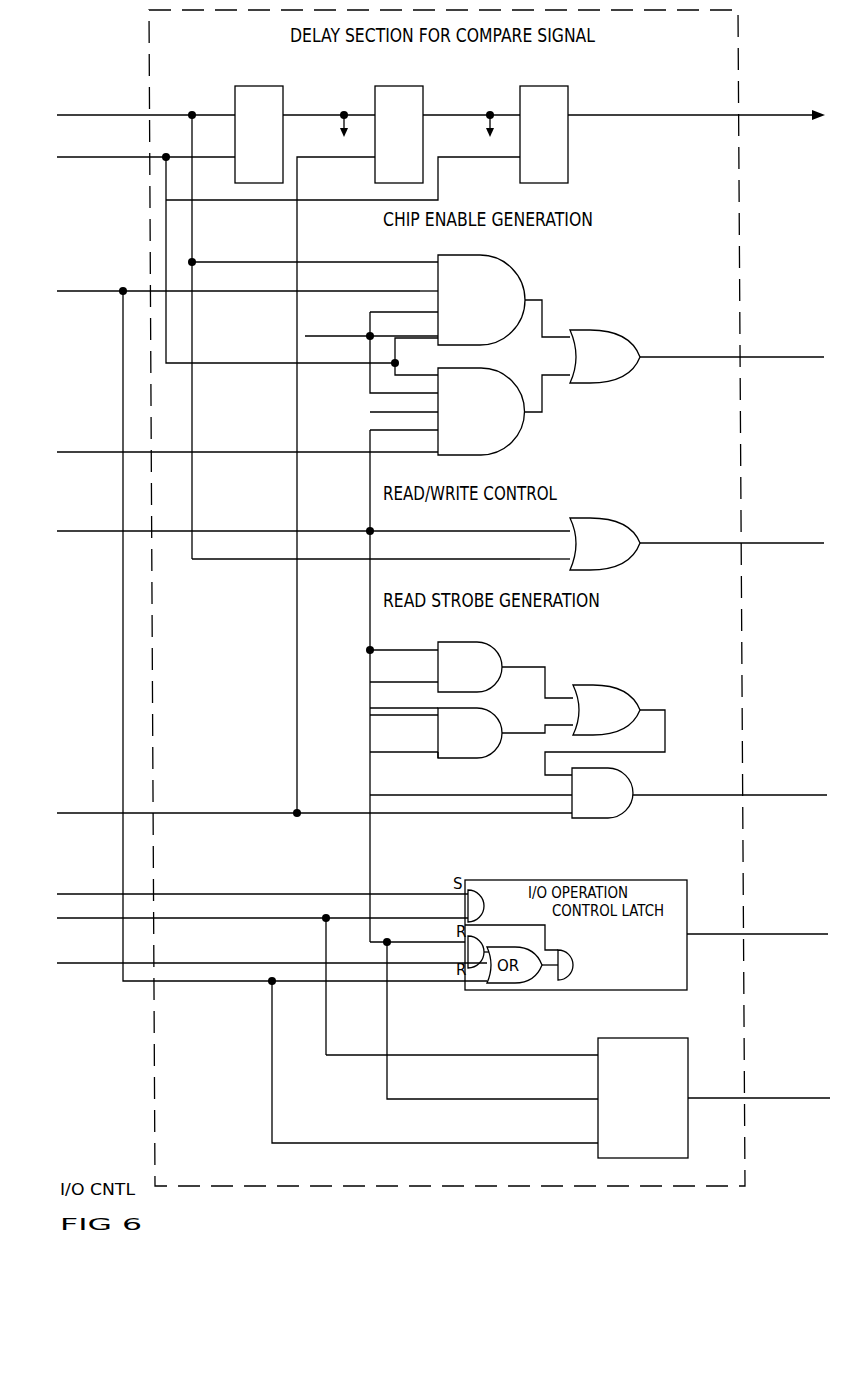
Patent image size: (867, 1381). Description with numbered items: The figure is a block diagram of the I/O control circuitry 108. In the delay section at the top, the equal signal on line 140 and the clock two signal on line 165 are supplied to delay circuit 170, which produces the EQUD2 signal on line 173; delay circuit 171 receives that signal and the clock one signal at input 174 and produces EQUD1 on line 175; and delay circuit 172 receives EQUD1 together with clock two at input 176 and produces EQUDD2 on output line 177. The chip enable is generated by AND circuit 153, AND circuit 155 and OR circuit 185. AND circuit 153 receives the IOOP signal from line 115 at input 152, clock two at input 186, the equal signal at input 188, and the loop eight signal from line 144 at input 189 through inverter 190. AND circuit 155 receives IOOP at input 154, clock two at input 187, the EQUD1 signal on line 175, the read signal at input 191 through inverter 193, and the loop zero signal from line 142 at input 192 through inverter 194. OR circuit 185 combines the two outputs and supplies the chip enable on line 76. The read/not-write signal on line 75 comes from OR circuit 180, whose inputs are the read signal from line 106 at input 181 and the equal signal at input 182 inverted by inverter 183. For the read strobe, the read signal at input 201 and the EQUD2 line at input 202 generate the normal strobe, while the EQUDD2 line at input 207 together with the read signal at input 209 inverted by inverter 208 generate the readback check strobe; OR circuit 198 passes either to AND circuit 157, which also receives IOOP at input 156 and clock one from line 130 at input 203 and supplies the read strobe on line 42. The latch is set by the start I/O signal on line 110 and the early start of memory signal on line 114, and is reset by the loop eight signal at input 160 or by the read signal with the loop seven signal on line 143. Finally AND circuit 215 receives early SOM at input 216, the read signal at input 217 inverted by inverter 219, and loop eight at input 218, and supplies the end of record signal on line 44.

The I/O control circuitry 108 is at (746, 232).
The equal input line 140 is at (144, 114).
The clock 2 input line 165 is at (146, 156).
The delay circuit 170 is at (243, 86).
The delay circuit 171 is at (384, 86).
The delay circuit 172 is at (529, 86).
The EQUD2 line 173 is at (366, 108).
The clock 1 input 174 is at (370, 160).
The EQUD1 line 175 is at (508, 108).
The clock 2 input 176 is at (512, 158).
The EQUDD2 output line 177 is at (787, 112).
The loop 8 line 144 is at (106, 290).
The loop 8 input 189 is at (341, 291).
The inverter 190 is at (432, 291).
The equal input 188 is at (397, 262).
The loop 0 line 142 is at (101, 452).
The loop 0 input 192 is at (355, 454).
The inverter 194 is at (438, 453).
The IOOP input 152 is at (432, 312).
The IOOP line 115 is at (367, 334).
The clock 2 input 186 is at (436, 338).
The clock 2 input 187 is at (437, 375).
The IOOP input 154 is at (372, 393).
The inverter 193 is at (436, 431).
The read input 191 is at (403, 432).
The AND circuit 153 is at (505, 257).
The AND circuit 155 is at (522, 436).
The OR circuit 185 is at (621, 330).
The chip enable line 76 is at (790, 357).
The read line 106 is at (103, 531).
The read input 181 is at (548, 531).
The equal input 182 is at (538, 559).
The inverter 183 is at (566, 565).
The OR circuit 180 is at (588, 518).
The read/not-write line 75 is at (802, 543).
The READ* input line 209 is at (372, 648).
The inverter 208 is at (436, 642).
The EQUDD2 input 207 is at (438, 683).
The read input 201 is at (428, 712).
The OR circuit 198 is at (582, 686).
The EQUD2 input 202 is at (435, 758).
The IOOP input 156 is at (562, 794).
The AND circuit 157 is at (622, 770).
The read strobe line 42 is at (803, 795).
The clock 1 line 130 is at (103, 813).
The clock 1 input 203 is at (488, 814).
The start I/O line 110 is at (101, 894).
The early start of memory line 114 is at (103, 918).
The loop 7 line 143 is at (106, 963).
The loop 8 input 160 is at (314, 982).
The early start of memory input 216 is at (568, 1055).
The read input 217 is at (510, 1099).
The inverter 219 is at (596, 1099).
The loop 8 input 218 is at (546, 1143).
The AND circuit 215 is at (652, 1038).
The end of record line 44 is at (803, 1098).